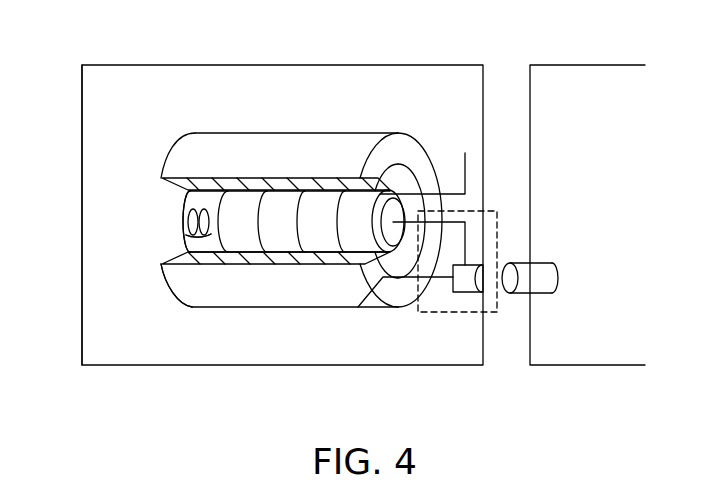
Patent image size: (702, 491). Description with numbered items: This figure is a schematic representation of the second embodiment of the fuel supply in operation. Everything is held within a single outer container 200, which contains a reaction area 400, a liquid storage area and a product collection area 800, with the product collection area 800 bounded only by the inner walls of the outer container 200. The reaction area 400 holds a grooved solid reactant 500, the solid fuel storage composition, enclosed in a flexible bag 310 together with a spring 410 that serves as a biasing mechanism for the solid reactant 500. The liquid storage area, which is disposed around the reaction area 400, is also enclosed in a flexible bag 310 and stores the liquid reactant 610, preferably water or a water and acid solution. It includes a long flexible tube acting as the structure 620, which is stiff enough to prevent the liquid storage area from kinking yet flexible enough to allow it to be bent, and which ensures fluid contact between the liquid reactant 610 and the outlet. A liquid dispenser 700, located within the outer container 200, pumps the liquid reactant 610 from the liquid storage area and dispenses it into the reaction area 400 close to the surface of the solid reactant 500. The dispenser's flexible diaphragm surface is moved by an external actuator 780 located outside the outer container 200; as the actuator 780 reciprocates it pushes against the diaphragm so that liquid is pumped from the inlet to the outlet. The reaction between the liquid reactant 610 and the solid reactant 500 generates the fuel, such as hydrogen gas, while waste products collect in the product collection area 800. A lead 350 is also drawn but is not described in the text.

The outer container 200 is at (295, 64).
The product collection area 800 is at (96, 97).
The liquid reactant 610 is at (281, 171).
The structure 620 is at (382, 308).
The solid reactant 500 is at (278, 212).
The flexible bag 310 is at (182, 216).
The reaction area 400 is at (183, 204).
The spring 410 is at (184, 235).
The lead wire 350 is at (464, 164).
The liquid dispenser 700 is at (470, 293).
The actuator 780 is at (560, 276).